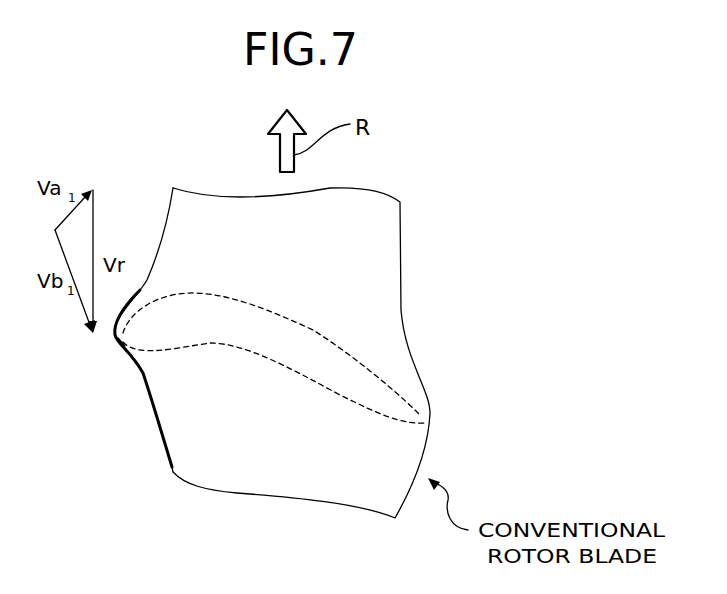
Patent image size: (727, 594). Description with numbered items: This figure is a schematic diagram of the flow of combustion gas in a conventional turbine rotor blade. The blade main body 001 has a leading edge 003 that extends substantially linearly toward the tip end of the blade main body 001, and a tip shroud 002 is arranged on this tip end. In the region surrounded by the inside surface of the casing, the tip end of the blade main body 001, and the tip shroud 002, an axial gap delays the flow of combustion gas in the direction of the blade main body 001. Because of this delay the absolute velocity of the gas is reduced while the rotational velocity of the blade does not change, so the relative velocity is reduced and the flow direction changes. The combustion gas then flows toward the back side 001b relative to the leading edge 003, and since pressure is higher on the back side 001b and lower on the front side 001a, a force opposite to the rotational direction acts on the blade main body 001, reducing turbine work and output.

The tip shroud 002 is at (383, 277).
The blade main body 001 is at (328, 423).
The front side 001a is at (323, 380).
The back side 001b is at (350, 352).
The leading edge 003 is at (120, 340).